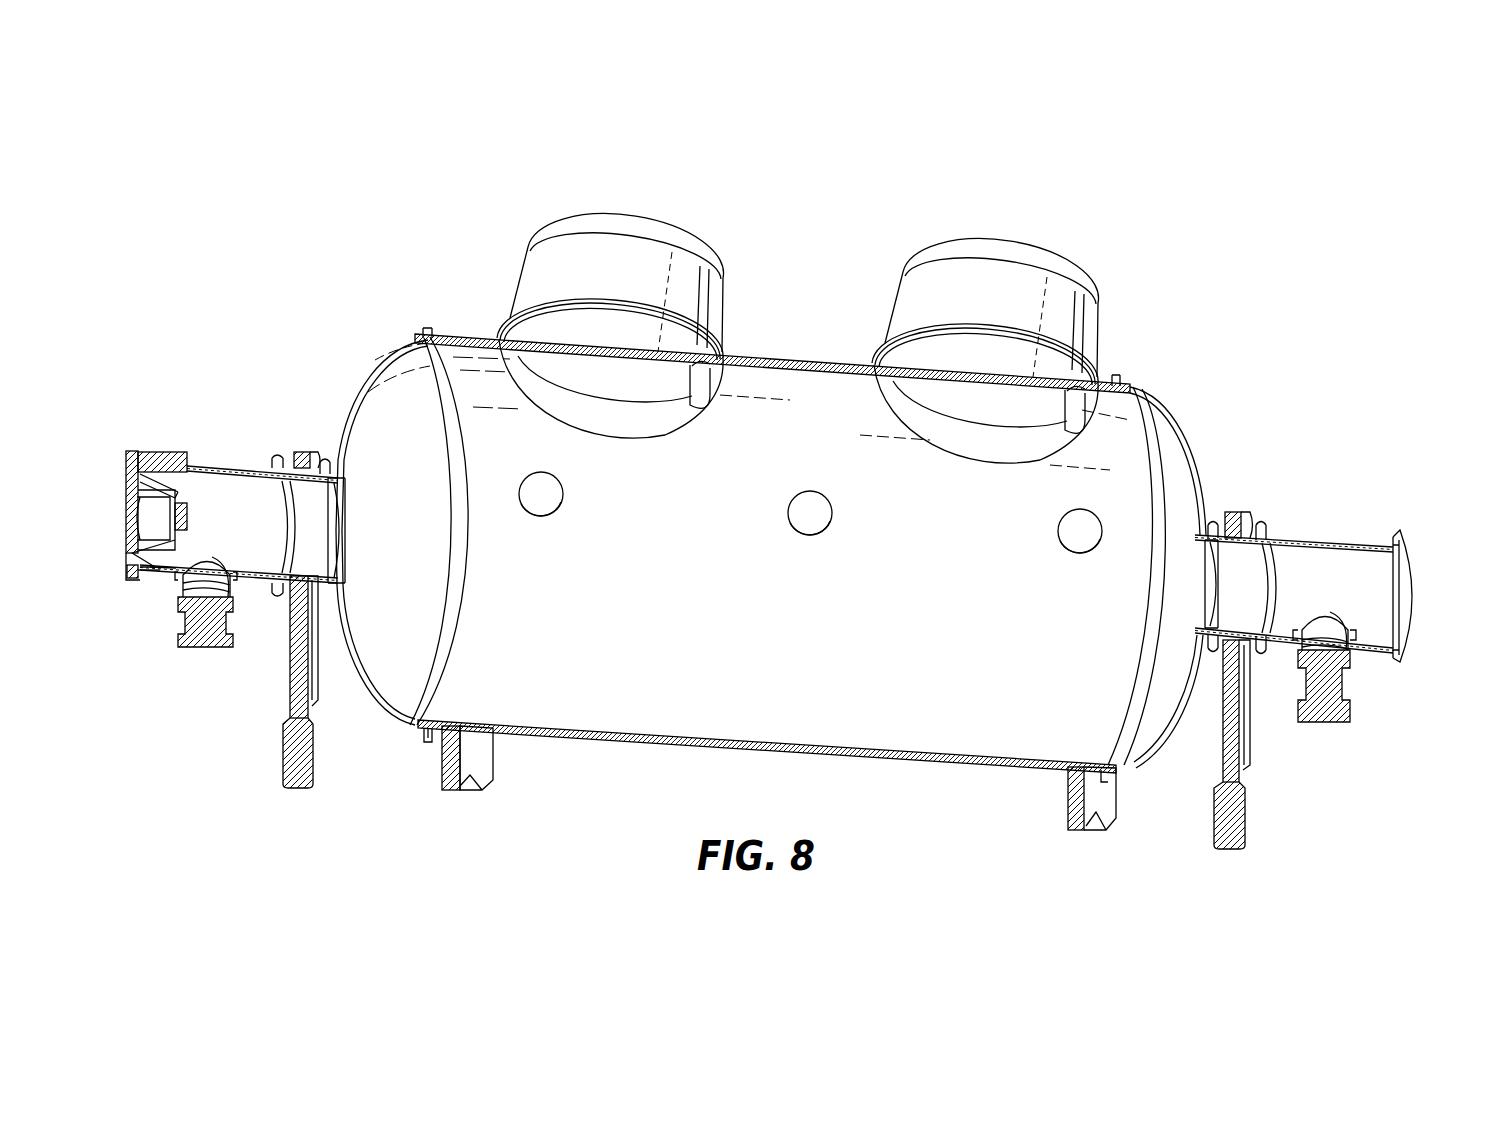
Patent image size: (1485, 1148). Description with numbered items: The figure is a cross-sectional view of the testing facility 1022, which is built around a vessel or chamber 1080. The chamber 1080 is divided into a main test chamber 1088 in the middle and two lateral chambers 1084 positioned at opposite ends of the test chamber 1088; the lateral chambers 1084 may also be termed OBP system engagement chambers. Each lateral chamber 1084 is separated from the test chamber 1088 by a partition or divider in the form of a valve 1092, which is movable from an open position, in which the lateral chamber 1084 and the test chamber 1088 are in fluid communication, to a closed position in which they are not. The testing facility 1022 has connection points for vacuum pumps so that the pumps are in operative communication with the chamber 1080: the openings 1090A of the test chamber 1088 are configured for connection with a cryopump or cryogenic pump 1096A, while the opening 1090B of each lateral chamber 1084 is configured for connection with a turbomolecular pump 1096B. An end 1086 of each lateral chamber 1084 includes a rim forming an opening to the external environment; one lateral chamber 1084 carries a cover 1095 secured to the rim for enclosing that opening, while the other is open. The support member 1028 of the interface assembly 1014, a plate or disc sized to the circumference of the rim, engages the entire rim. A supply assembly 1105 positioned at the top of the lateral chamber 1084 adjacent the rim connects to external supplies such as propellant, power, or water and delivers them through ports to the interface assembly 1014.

The testing facility 1022 is at (876, 188).
The chamber 1080 is at (908, 778).
The test chamber 1088 is at (814, 382).
The valve 1092 is at (302, 760).
The cryogenic pump 1096A is at (622, 215).
The opening 1090A is at (733, 376).
The supply assembly 1105 is at (182, 438).
The lateral chamber 1084 is at (244, 492).
The cover 1095 is at (1408, 570).
The support member 1028 is at (128, 452).
The end 1086 is at (148, 580).
The interface assembly 1014 is at (160, 560).
The turbomolecular pump 1096B is at (196, 642).
The opening 1090B is at (205, 622).